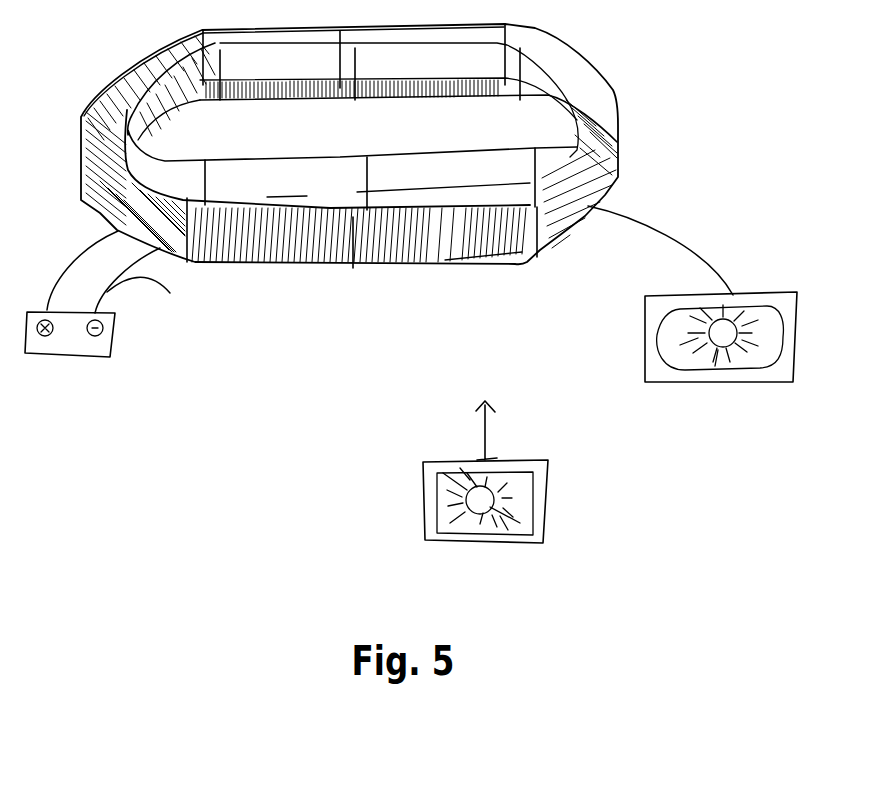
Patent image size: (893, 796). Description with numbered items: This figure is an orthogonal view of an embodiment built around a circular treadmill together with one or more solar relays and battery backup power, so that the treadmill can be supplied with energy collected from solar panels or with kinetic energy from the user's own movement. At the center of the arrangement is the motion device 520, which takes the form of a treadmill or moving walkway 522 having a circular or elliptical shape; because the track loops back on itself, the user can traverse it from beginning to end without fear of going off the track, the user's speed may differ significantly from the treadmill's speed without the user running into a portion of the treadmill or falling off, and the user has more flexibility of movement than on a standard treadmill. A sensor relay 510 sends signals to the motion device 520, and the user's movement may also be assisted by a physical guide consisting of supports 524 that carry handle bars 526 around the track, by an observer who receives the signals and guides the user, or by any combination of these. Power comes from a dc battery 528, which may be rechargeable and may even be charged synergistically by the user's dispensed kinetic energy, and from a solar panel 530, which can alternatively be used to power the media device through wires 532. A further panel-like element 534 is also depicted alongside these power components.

The signal / communication arrow 510 is at (477, 430).
The wearable band 520 is at (252, 236).
The band segment 522 is at (350, 264).
The band segment 524 is at (527, 252).
The band rim 526 is at (160, 53).
The control module 528 is at (67, 360).
The display device 530 is at (670, 382).
The connecting wire 532 is at (648, 229).
The display device 534 is at (547, 507).